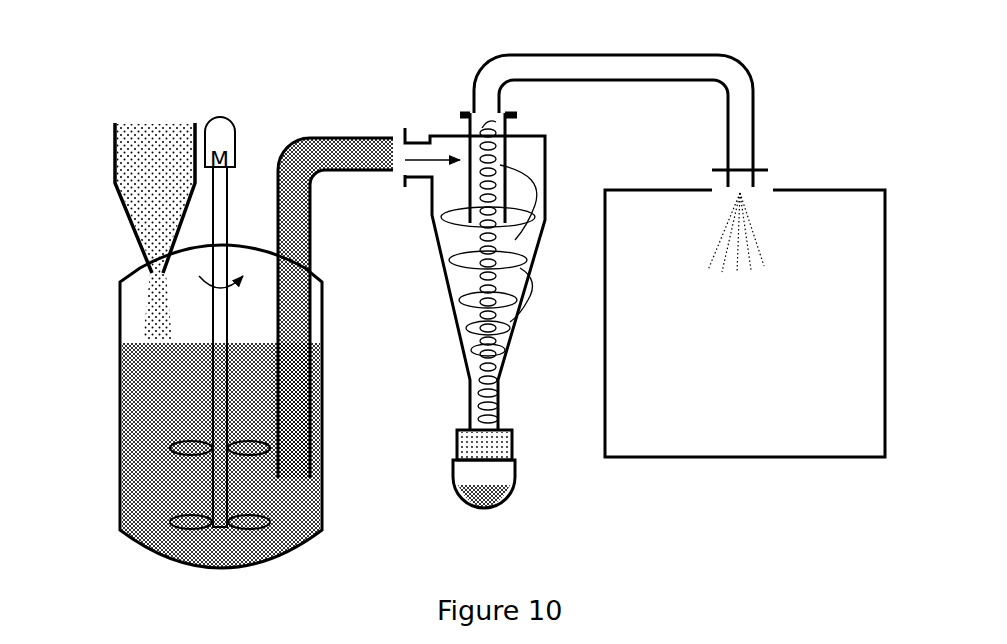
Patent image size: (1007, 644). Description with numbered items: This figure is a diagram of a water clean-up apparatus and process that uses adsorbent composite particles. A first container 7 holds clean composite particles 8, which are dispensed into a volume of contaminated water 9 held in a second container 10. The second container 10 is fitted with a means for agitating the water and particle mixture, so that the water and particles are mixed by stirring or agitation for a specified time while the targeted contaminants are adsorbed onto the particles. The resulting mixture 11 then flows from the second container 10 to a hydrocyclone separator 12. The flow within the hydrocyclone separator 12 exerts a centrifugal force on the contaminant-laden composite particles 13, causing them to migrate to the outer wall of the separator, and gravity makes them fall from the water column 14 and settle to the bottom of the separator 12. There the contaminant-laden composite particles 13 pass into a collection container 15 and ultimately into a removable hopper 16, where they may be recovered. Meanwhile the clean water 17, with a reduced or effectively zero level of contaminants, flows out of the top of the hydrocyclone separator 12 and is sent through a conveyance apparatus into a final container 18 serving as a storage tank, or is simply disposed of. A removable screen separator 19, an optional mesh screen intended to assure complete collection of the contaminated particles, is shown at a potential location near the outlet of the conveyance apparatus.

The first container 7 is at (110, 170).
The clean composite particles 8 is at (153, 142).
The volume of contaminated water 9 is at (138, 440).
The second container 10 is at (323, 322).
The mixture 11 is at (318, 148).
The hydrocyclone separator 12 is at (443, 298).
The contaminant-laden composite particles 13 is at (472, 445).
The water column 14 is at (518, 260).
The collection container 15 is at (512, 448).
The removable hopper 16 is at (452, 480).
The clean water 17 is at (728, 217).
The final container 18 is at (887, 265).
The removable screen separator 19 is at (758, 168).